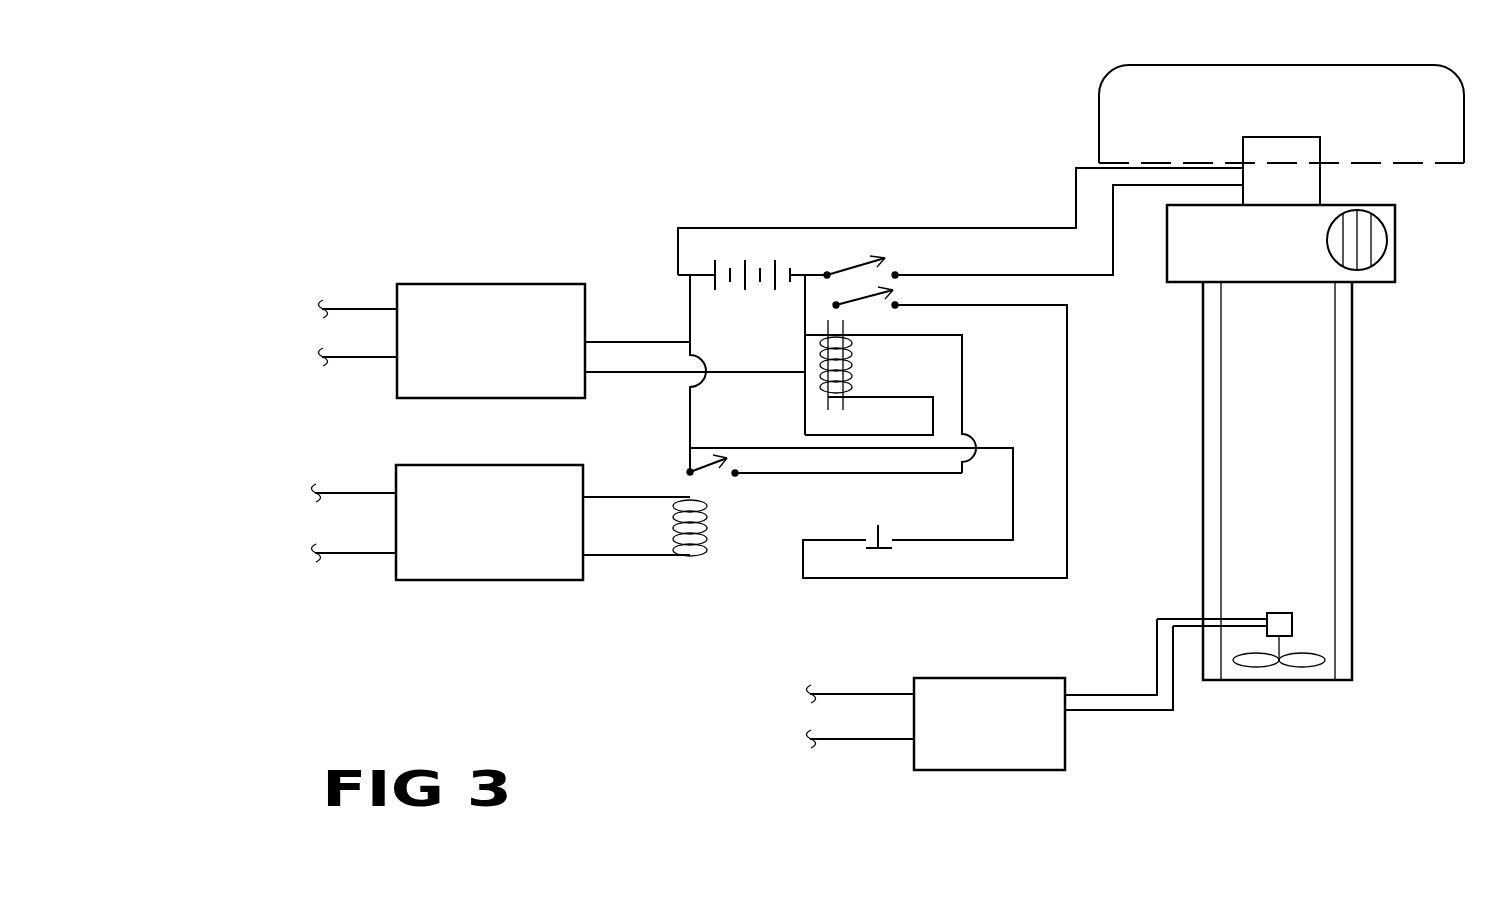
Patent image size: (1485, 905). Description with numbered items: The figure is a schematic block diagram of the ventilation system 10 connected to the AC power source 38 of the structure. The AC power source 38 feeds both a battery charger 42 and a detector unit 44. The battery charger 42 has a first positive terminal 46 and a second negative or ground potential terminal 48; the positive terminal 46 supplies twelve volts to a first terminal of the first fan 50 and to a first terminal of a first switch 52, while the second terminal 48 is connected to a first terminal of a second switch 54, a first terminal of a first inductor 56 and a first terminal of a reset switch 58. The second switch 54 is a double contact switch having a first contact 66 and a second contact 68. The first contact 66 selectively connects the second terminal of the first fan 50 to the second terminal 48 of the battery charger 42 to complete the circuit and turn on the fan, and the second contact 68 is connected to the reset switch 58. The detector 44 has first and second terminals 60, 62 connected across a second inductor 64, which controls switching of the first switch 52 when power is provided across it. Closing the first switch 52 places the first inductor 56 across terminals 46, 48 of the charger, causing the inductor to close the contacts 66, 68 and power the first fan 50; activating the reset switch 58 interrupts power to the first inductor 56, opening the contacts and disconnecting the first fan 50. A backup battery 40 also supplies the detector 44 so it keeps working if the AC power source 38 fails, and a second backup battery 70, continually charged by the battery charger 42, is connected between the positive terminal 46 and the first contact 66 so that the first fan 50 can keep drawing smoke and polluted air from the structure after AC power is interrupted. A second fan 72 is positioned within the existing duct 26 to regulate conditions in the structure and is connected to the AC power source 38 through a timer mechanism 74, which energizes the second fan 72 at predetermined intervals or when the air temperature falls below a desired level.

The ventilation system 10 is at (512, 228).
The existing duct 26 is at (1352, 492).
The AC power source 38 is at (534, 522).
The backup battery 40 is at (304, 558).
The battery charger 42 is at (472, 321).
The detector unit 44 is at (472, 502).
The first positive terminal 46 is at (621, 337).
The second negative or ground potential terminal 48 is at (678, 377).
The first fan 50 is at (1205, 256).
The first switch 52 is at (808, 470).
The second switch 54 is at (846, 260).
The first inductor 56 is at (890, 396).
The reset switch 58 is at (906, 520).
The first terminal 60 is at (618, 499).
The second terminal 62 is at (618, 557).
The second inductor 64 is at (709, 528).
The first contact 66 is at (857, 262).
The second contact 68 is at (852, 301).
The second backup battery 70 is at (752, 213).
The second fan 72 is at (1245, 665).
The timer mechanism 74 is at (970, 710).